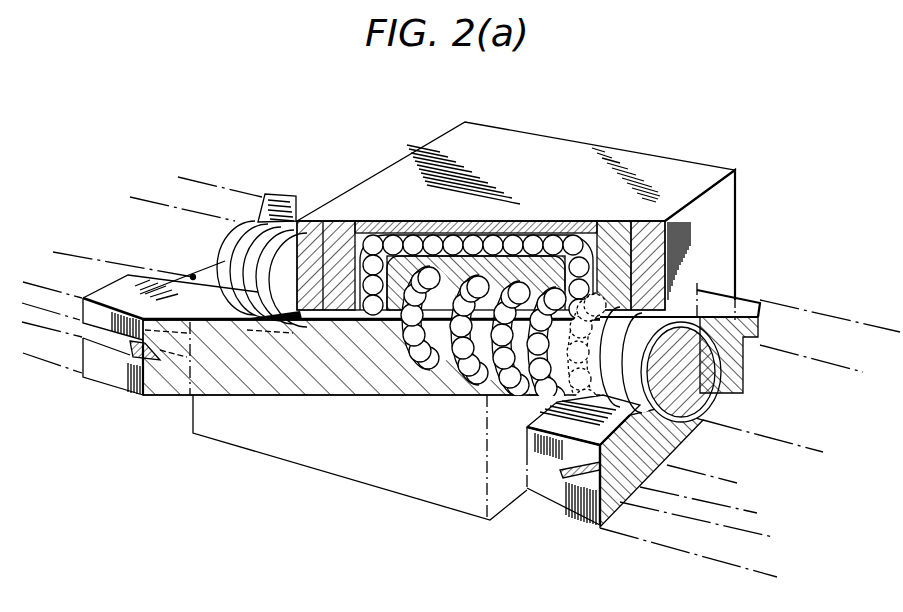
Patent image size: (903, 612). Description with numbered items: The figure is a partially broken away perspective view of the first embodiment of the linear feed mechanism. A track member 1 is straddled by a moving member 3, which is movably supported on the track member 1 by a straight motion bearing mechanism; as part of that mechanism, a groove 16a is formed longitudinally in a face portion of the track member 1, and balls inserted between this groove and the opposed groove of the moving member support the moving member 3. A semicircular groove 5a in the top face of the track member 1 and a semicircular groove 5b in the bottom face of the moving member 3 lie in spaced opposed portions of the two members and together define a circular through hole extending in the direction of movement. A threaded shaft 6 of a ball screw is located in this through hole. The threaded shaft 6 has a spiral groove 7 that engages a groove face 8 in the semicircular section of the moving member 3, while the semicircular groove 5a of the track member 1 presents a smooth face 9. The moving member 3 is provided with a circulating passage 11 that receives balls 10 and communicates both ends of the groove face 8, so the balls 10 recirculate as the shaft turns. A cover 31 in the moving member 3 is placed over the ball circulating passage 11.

The track member 1 is at (110, 378).
The groove 16a is at (134, 395).
The moving member 3 is at (662, 170).
The cover 31 is at (433, 197).
The circulating passage 11 is at (405, 218).
The semicircular groove 5a is at (343, 340).
The semicircular groove 5b is at (553, 257).
The groove face 8 is at (407, 287).
The balls 10 is at (477, 243).
The threaded shaft 6 is at (688, 372).
The spiral groove 7 is at (573, 436).
The smooth face 9 is at (193, 277).